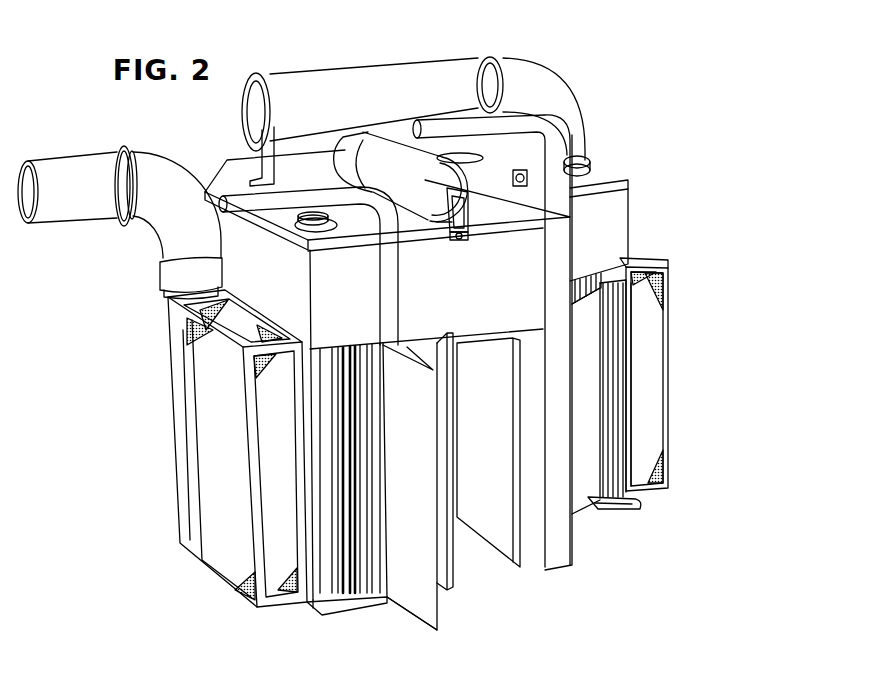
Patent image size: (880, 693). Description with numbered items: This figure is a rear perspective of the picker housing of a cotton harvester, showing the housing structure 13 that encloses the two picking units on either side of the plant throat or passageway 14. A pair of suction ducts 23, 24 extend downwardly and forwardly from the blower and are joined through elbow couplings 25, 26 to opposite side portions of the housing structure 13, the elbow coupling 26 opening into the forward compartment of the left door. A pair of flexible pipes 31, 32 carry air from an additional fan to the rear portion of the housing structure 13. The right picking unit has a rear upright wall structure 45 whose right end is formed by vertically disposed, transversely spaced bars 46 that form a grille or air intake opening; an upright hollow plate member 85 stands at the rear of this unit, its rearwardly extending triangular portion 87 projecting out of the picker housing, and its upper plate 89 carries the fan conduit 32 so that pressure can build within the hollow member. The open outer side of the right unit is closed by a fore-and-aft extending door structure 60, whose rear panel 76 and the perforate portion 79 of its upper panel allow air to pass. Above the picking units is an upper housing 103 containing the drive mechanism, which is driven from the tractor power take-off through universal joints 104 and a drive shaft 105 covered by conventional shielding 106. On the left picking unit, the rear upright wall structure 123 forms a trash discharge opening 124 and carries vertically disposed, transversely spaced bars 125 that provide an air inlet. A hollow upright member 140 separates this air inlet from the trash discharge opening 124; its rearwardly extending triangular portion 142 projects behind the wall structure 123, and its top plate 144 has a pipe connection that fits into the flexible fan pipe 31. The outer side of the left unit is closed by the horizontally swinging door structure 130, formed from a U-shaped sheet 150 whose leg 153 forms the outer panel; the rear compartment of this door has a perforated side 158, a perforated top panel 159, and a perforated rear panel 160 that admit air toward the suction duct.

The housing structure 13 is at (613, 172).
The throat or passageway 14 is at (475, 562).
The suction duct 23 is at (382, 77).
The suction duct 24 is at (65, 167).
The elbow coupling 25 is at (562, 112).
The elbow coupling 26 is at (172, 188).
The flexible pipe 31 is at (515, 118).
The flexible pipe 32 is at (253, 205).
The rear upright wall structure 45 is at (633, 438).
The vertically disposed transversely spaced bars 46 is at (617, 348).
The door structure 60 is at (673, 298).
The rear panel 76 is at (653, 272).
The perforate portion of upper panel 79 is at (629, 259).
The upright hollow plate member 85 is at (590, 518).
The rearwardly extending portion 87 is at (607, 508).
The upper plate 89 is at (578, 290).
The upper housing 103 is at (593, 207).
The universal joints 104 is at (469, 242).
The drive shaft 105 is at (470, 207).
The shielding 106 is at (387, 137).
The rear upright wall structure 123 is at (327, 600).
The trash discharge opening 124 is at (422, 347).
The vertically disposed transversely spaced bars 125 is at (352, 345).
The door structure 130 is at (182, 403).
The hollow upright member 140 is at (443, 615).
The rearwardly extending triangular portion 142 is at (408, 595).
The top plate 144 is at (407, 343).
The U-shaped sheet 150 is at (173, 320).
The leg forming outer panel 153 is at (182, 460).
The perforated side 158 is at (218, 548).
The perforated top panel 159 is at (192, 324).
The perforated rear panel 160 is at (278, 585).